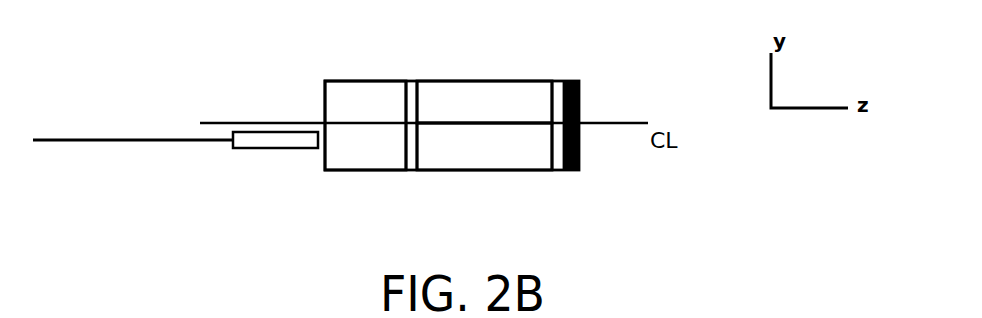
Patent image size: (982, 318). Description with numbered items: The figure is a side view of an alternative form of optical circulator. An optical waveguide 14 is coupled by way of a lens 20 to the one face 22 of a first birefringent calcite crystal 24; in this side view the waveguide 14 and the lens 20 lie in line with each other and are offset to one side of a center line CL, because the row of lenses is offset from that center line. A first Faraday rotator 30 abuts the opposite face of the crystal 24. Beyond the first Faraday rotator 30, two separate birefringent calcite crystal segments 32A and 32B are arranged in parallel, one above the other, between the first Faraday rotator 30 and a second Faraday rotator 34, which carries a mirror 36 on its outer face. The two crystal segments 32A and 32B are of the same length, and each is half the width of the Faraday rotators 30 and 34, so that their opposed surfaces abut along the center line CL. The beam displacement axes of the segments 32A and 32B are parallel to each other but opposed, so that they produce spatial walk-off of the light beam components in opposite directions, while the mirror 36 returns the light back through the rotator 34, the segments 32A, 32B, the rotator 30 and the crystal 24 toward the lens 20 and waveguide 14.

The optical waveguide 14 is at (103, 138).
The lens 20 is at (262, 125).
The one face of first birefringent calcite crystal 22 is at (325, 160).
The first birefringent calcite crystal 24 is at (358, 92).
The first Faraday rotator 30 is at (411, 88).
The birefringent calcite crystal segment 32A is at (493, 97).
The birefringent calcite crystal segment 32B is at (482, 170).
The second Faraday rotator 34 is at (558, 82).
The mirror 36 is at (579, 87).